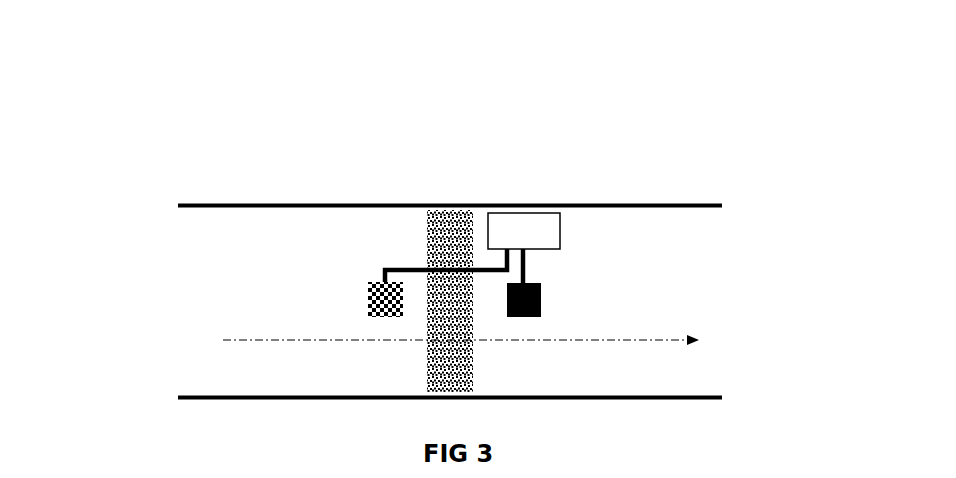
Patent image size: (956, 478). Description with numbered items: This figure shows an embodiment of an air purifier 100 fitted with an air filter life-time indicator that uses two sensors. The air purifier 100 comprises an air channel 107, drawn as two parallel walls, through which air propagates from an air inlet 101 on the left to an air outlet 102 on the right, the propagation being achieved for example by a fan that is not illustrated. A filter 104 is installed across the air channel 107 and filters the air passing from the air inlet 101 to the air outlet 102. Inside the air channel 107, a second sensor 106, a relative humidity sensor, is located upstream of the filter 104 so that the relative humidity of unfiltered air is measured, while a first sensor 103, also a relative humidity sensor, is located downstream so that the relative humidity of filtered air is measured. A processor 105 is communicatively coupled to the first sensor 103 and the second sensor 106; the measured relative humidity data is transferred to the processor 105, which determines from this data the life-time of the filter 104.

The air purifier 100 is at (124, 152).
The air inlet 101 is at (202, 295).
The air outlet 102 is at (712, 284).
The first sensor 103 is at (542, 290).
The filter 104 is at (437, 250).
The processor 105 is at (560, 227).
The second sensor 106 is at (370, 295).
The air channel 107 is at (675, 202).